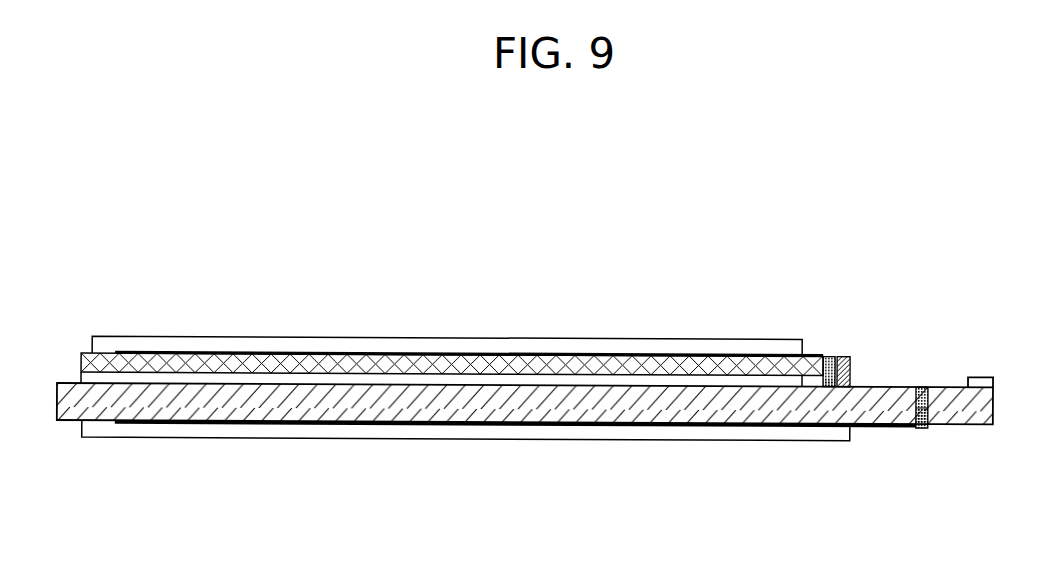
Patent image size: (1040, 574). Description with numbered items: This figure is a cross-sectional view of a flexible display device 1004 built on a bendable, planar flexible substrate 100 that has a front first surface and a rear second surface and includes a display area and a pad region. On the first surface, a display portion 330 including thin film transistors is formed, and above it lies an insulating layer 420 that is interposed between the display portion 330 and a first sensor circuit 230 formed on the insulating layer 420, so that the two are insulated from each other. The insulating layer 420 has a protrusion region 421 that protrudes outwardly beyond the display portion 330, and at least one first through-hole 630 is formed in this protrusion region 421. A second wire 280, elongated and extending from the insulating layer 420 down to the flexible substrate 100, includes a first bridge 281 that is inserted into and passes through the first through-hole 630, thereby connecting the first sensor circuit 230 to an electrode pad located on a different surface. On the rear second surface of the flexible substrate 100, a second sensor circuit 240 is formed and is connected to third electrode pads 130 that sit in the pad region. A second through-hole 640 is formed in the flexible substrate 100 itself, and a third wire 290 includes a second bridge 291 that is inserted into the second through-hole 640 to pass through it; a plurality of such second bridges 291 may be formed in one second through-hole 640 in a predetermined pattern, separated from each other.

The flexible substrate 100 is at (450, 407).
The third electrode pads 130 is at (976, 378).
The first sensor circuit 230 is at (209, 345).
The second sensor circuit 240 is at (316, 430).
The second wire 280 is at (761, 356).
The first bridge 281 is at (828, 358).
The third wire 290 is at (695, 424).
The second bridge 291 is at (921, 390).
The display portion 330 is at (362, 380).
The insulating layer 420 is at (467, 354).
The protrusion region 421 is at (845, 357).
The first through-hole 630 is at (815, 388).
The second through-hole 640 is at (927, 408).
The flexible display device 1004 is at (619, 302).